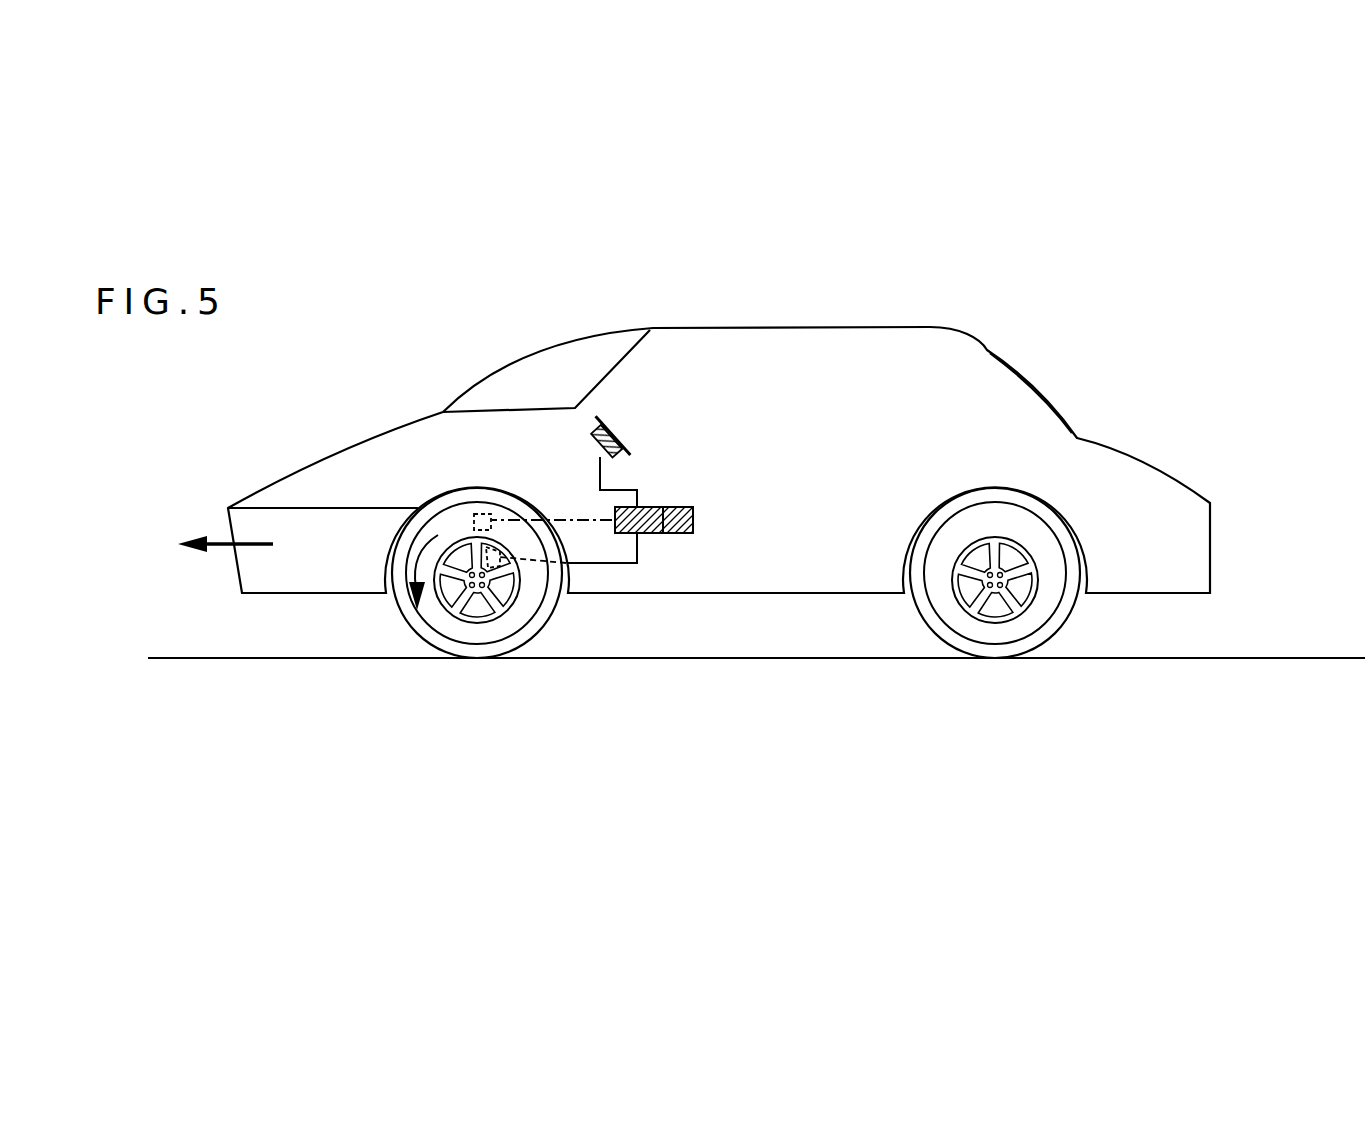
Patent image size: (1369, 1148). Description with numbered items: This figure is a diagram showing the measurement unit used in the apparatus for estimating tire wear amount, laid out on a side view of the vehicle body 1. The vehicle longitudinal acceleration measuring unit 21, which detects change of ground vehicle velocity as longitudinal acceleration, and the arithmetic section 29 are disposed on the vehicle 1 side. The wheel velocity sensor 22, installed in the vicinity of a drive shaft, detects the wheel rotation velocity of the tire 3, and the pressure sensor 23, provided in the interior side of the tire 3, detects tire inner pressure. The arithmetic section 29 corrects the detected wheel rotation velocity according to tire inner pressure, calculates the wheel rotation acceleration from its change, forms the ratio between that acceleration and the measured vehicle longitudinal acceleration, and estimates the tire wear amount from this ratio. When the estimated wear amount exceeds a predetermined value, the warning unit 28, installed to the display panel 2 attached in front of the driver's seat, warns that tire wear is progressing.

The vehicle body 1 is at (413, 415).
The display panel 2 is at (612, 428).
The tire 3 is at (437, 538).
The vehicle longitudinal acceleration measuring unit 21 is at (686, 527).
The wheel velocity sensor 22 is at (508, 620).
The pressure sensor 23 is at (513, 560).
The warning unit 28 is at (587, 433).
The arithmetic section 29 is at (655, 507).